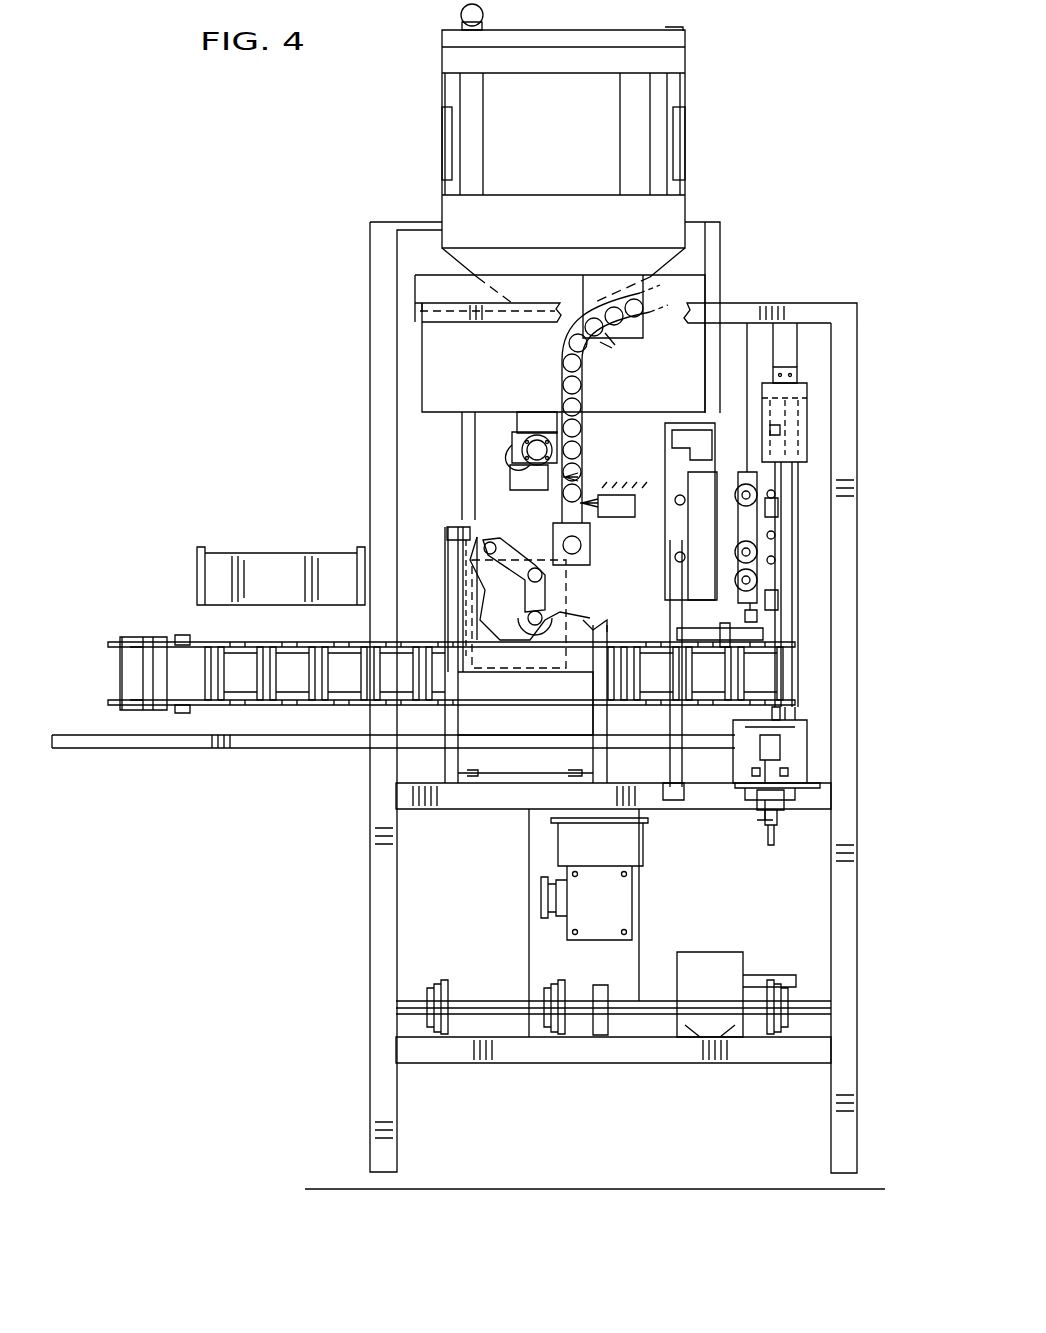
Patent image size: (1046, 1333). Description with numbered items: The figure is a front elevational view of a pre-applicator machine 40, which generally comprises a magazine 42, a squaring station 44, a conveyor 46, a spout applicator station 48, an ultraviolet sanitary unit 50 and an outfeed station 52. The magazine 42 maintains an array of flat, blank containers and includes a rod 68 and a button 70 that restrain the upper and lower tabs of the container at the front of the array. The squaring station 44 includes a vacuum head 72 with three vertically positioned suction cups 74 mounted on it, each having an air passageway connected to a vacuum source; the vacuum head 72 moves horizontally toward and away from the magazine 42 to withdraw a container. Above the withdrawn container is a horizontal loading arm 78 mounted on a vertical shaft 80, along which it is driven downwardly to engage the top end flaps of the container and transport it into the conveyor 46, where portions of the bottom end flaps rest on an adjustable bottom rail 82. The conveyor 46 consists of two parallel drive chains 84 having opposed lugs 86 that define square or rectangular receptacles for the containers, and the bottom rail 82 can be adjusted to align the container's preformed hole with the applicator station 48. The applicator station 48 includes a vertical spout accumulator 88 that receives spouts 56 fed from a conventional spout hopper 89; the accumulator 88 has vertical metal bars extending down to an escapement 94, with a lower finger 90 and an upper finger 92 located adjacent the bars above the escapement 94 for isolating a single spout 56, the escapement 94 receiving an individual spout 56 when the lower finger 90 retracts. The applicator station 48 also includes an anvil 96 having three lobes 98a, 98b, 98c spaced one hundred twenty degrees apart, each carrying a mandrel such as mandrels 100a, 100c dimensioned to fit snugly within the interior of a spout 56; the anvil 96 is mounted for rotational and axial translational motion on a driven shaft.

The pre-applicator machine 40 is at (318, 193).
The magazine 42 is at (672, 577).
The squaring station 44 is at (805, 528).
The conveyor 46 is at (283, 713).
The spout applicator station 48 is at (433, 543).
The ultraviolet sanitary unit 50 is at (272, 560).
The outfeed station 52 is at (135, 632).
The spout 56 is at (562, 360).
The rod 68 is at (704, 440).
The button 70 is at (753, 617).
The vacuum head 72 is at (750, 523).
The suction cups 74 is at (753, 580).
The loading arm 78 is at (775, 430).
The vertical shaft 80 is at (778, 480).
The bottom rail 82 is at (130, 740).
The drive chains 84 is at (235, 710).
The lugs 86 is at (322, 712).
The spout accumulator 88 is at (618, 367).
The spout hopper 89 is at (688, 98).
The lower finger 90 is at (697, 340).
The upper finger 92 is at (540, 455).
The escapement 94 is at (575, 503).
The anvil 96 is at (543, 578).
The lobe 98a is at (475, 560).
The lobe 98b is at (515, 550).
The lobe 98c is at (547, 555).
The mandrel 100a is at (543, 615).
The mandrel 100c is at (440, 560).